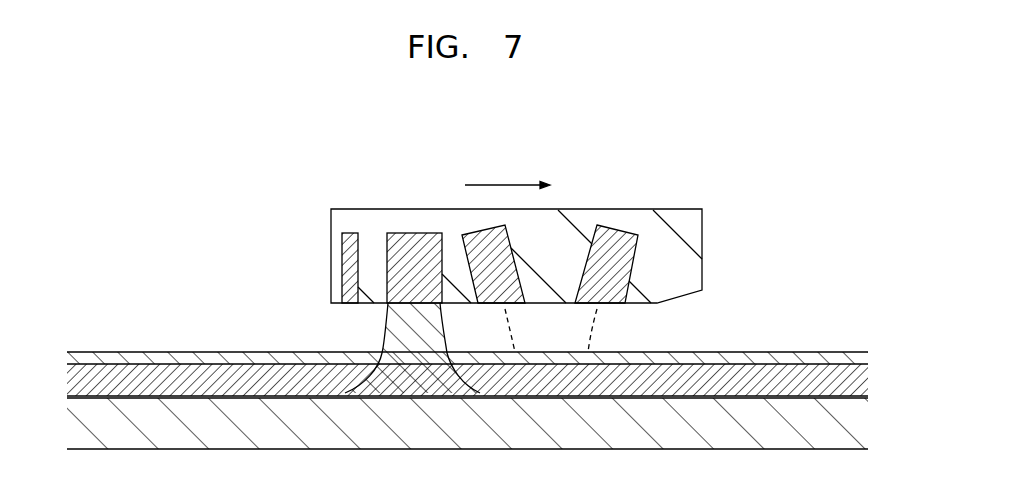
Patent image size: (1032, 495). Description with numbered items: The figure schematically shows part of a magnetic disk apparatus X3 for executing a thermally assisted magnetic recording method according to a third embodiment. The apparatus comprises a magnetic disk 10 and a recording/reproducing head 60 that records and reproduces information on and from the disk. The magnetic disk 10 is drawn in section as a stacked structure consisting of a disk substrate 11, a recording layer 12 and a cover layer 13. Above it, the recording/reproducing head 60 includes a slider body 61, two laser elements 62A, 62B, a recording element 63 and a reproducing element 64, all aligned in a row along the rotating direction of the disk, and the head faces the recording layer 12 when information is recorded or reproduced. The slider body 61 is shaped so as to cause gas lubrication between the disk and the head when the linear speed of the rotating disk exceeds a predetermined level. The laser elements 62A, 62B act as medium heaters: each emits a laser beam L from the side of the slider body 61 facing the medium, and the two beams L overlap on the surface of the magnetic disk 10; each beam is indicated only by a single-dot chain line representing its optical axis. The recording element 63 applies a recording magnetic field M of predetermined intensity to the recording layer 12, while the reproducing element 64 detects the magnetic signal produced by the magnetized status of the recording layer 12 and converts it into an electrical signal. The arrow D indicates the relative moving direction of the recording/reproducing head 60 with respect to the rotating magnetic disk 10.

The magnetic disk 10 is at (827, 338).
The disk substrate 11 is at (850, 422).
The recording layer 12 is at (862, 386).
The cover layer 13 is at (860, 363).
The recording/reproducing head 60 is at (325, 222).
The slider body 61 is at (687, 223).
The laser element 62A is at (605, 237).
The laser element 62B is at (480, 237).
The recording element 63 is at (398, 234).
The reproducing element 64 is at (350, 260).
The recording magnetic field M is at (383, 328).
The laser beam L is at (505, 322).
The arrow indicating relative moving direction D is at (507, 170).
The magnetic disk apparatus X3 is at (125, 265).